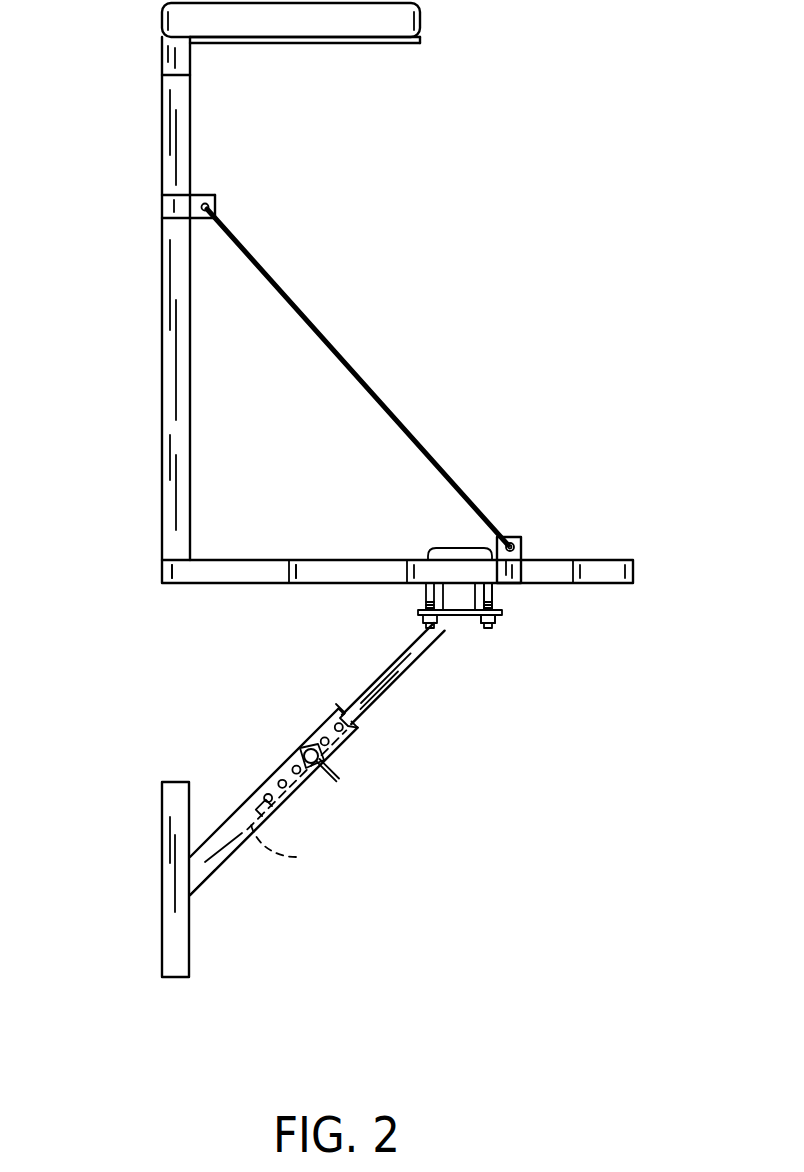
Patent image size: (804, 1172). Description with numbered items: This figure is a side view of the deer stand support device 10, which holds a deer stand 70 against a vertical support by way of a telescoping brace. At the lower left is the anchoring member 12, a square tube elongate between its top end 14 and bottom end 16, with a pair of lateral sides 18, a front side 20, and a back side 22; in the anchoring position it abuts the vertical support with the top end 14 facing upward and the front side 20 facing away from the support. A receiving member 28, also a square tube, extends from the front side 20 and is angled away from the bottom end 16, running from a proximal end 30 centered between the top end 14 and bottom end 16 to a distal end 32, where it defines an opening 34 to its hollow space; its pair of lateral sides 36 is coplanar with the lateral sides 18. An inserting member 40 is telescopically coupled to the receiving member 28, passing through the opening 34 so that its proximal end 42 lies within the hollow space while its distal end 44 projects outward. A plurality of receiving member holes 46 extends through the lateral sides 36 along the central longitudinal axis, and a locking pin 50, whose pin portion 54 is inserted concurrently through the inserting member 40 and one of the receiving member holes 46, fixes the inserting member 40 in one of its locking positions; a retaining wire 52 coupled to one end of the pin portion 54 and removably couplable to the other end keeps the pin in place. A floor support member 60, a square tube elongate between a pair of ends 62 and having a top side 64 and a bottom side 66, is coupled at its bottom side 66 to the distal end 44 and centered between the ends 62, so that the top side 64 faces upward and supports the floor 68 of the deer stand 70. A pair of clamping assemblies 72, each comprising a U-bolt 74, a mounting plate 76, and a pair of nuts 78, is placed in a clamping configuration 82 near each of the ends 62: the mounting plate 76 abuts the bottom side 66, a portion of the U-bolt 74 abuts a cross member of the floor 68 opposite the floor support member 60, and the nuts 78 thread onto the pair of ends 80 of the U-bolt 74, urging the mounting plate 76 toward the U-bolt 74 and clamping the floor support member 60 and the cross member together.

The deer stand support device 10 is at (543, 946).
The anchoring member 12 is at (178, 945).
The top end 14 is at (173, 781).
The bottom end 16 is at (172, 977).
The lateral sides 18 is at (172, 830).
The front side 20 is at (190, 920).
The back side 22 is at (162, 923).
The receiving member 28 is at (237, 835).
The proximal end 30 is at (193, 871).
The distal end 32 is at (366, 706).
The opening 34 is at (350, 712).
The lateral sides 36 is at (208, 862).
The inserting member 40 is at (366, 692).
The proximal end 42 is at (294, 846).
The distal end 44 is at (462, 624).
The receiving member holes 46 is at (533, 758).
The locking pin 50 is at (350, 835).
The retaining wire 52 is at (338, 770).
The pin portion 54 is at (327, 757).
The floor support member 60 is at (500, 545).
The ends 62 is at (452, 598).
The top side 64 is at (462, 600).
The bottom side 66 is at (440, 612).
The floor 68 is at (250, 572).
The deer stand 70 is at (497, 112).
The clamping assemblies 72 is at (435, 488).
The U-bolt 74 is at (446, 548).
The mounting plate 76 is at (484, 628).
The nuts 78 is at (428, 612).
The ends of the U-bolt 80 is at (430, 624).
The clamping configuration 82 is at (607, 508).